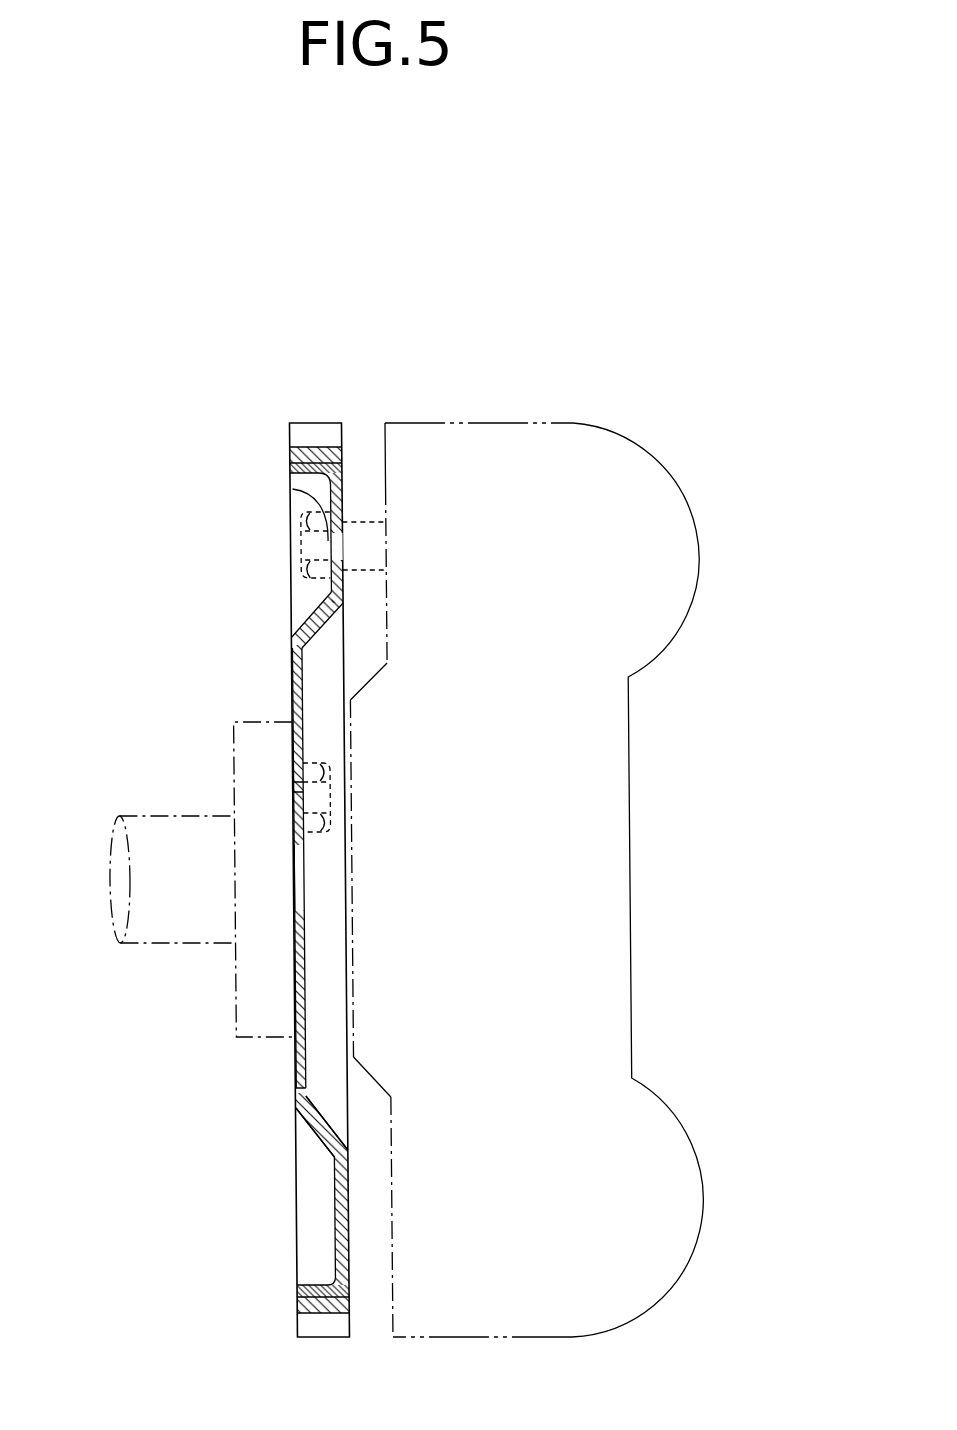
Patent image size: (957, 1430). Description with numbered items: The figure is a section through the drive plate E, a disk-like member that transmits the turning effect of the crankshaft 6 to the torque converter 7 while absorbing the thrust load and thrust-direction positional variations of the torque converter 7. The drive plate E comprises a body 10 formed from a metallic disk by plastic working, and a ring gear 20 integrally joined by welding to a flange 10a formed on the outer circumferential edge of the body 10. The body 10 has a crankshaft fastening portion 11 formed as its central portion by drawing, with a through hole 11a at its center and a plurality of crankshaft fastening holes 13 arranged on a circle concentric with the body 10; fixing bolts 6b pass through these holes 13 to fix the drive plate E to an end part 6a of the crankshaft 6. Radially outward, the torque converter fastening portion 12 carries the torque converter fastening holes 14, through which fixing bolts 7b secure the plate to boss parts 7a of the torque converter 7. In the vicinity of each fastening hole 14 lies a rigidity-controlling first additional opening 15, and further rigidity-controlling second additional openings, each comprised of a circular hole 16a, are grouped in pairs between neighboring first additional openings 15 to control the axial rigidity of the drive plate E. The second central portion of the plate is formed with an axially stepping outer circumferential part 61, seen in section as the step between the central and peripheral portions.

The drive plate E is at (262, 345).
The ring gear 20 is at (310, 421).
The body 10 is at (166, 583).
The flange 10a is at (290, 473).
The crankshaft fastening portion 11 is at (289, 660).
The through hole 11a is at (301, 897).
The torque converter fastening portion 12 is at (328, 603).
The crankshaft fastening holes 13 is at (289, 800).
The torque converter fastening holes 14 is at (337, 531).
The rigidity-controlling first additional openings 15 is at (337, 583).
The circular hole 16a is at (289, 1087).
The axially stepping outer circumferential part 61 is at (307, 1140).
The torque converter 7 is at (497, 421).
The boss parts 7a is at (362, 520).
The fixing bolts 7b is at (291, 493).
The crankshaft 6 is at (119, 892).
The end part 6a is at (233, 1006).
The fixing bolts 6b is at (327, 815).